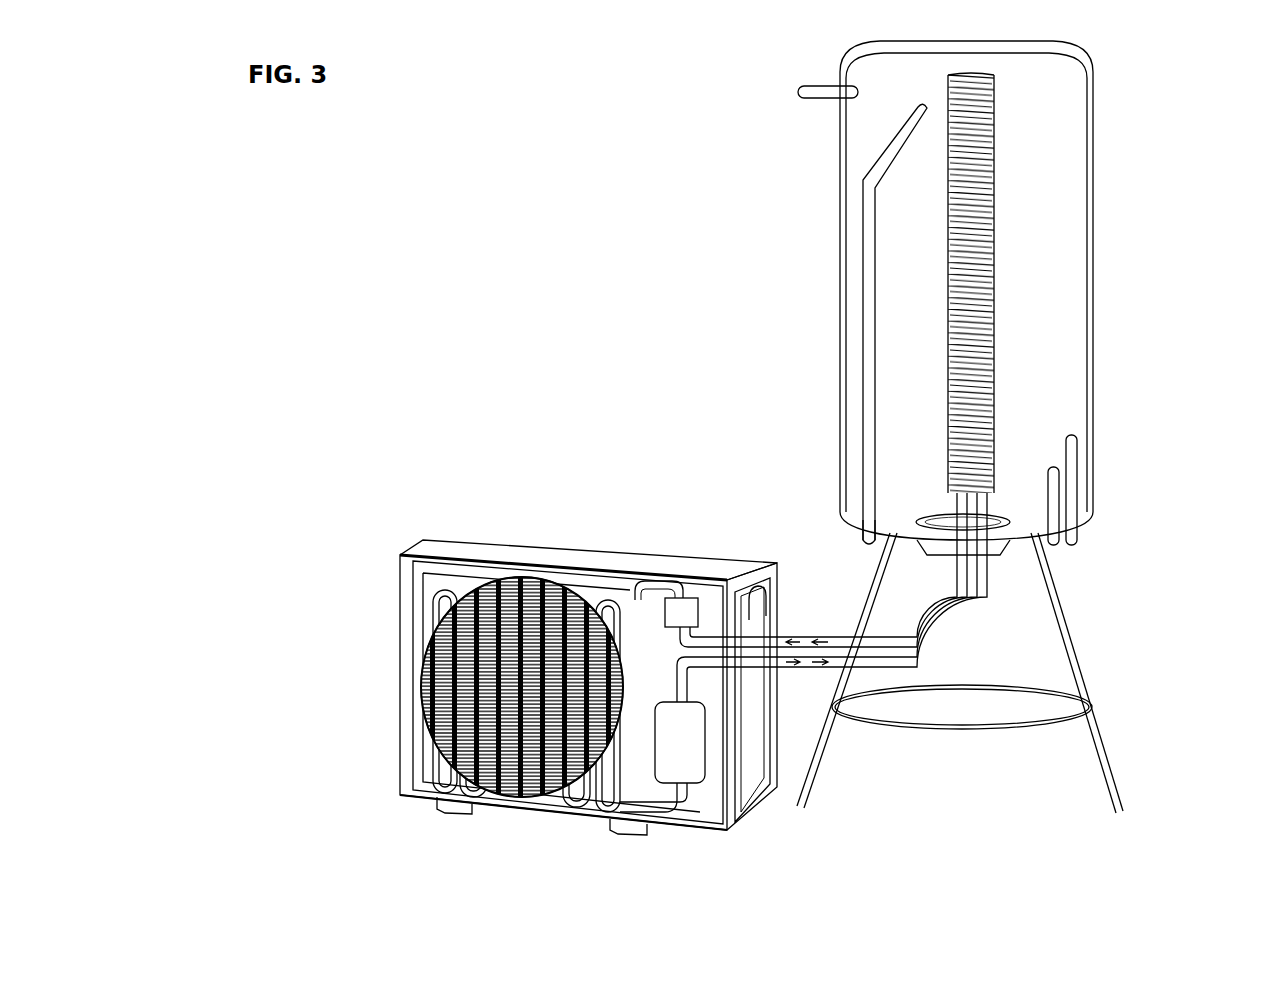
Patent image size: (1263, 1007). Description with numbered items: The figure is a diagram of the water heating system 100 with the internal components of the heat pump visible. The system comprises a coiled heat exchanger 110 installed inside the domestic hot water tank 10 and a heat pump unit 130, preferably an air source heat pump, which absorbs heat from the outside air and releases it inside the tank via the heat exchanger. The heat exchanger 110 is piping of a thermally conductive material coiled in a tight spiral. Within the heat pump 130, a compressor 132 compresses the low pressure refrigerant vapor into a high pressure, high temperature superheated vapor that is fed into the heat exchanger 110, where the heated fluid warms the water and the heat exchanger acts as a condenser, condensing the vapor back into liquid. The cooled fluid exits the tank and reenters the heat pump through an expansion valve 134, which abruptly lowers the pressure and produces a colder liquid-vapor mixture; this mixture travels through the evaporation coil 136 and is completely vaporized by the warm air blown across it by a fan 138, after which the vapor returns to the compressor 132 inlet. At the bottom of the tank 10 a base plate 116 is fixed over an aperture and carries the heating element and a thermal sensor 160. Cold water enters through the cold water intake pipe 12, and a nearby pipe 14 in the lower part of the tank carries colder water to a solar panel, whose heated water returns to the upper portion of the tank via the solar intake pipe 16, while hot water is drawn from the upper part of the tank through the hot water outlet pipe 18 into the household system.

The water heating system 100 is at (515, 337).
The domestic hot water tank 10 is at (1098, 325).
The coiled heat exchanger 110 is at (995, 248).
The solar intake pipe 16 is at (798, 94).
The hot water outlet pipe 18 is at (863, 324).
The base plate 116 is at (862, 519).
The cold water intake pipe 12 is at (1078, 443).
The pipe 14 is at (1060, 491).
The thermal sensor 160 is at (962, 496).
The heat pump unit 130 is at (373, 760).
The evaporation coil 136 is at (413, 581).
The fan 138 is at (421, 678).
The expansion valve 134 is at (678, 605).
The compressor 132 is at (677, 758).